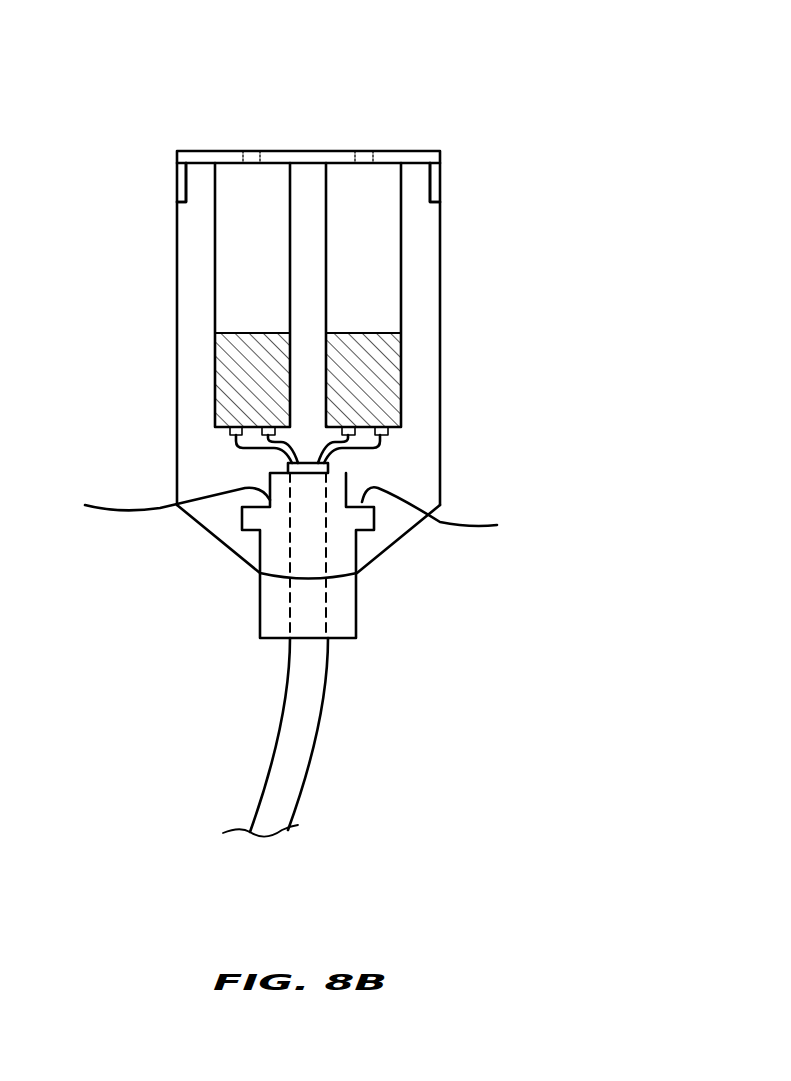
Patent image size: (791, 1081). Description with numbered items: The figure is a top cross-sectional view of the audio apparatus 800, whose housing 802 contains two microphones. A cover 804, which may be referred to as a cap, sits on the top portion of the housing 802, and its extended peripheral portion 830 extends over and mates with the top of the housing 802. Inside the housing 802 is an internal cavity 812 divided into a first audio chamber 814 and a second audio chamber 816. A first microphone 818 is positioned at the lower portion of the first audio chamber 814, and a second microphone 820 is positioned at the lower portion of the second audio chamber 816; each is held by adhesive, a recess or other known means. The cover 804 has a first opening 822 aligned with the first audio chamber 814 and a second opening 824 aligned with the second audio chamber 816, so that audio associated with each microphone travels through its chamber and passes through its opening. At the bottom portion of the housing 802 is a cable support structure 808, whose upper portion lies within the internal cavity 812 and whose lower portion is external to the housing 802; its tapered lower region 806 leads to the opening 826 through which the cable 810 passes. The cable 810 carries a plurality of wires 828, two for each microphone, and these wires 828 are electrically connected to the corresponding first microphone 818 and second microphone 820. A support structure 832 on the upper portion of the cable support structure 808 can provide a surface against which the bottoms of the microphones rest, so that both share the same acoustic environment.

The audio apparatus 800 is at (485, 108).
The housing 802 is at (176, 302).
The cover 804 is at (305, 151).
The tapered lower housing portion 806 is at (200, 533).
The cable support structure 808 is at (240, 515).
The cable 810 is at (280, 468).
The internal cavity 812 is at (415, 478).
The first audio chamber 814 is at (252, 295).
The second audio chamber 816 is at (363, 295).
The first microphone 818 is at (252, 380).
The second microphone 820 is at (363, 380).
The first opening 822 is at (243, 151).
The second opening 824 is at (368, 151).
The opening 826 is at (290, 605).
The wires 828 is at (237, 448).
The extended peripheral portion 830 is at (176, 183).
The support structure 832 is at (293, 513).